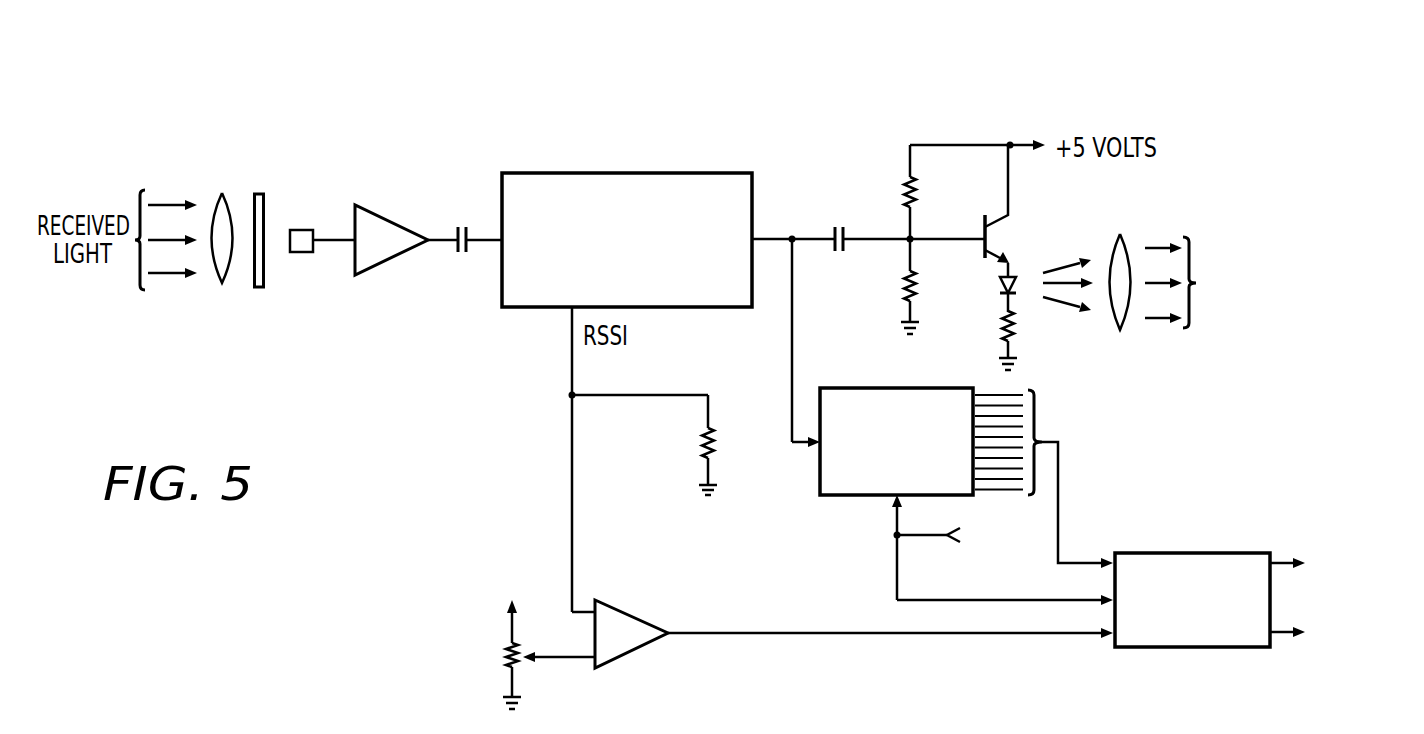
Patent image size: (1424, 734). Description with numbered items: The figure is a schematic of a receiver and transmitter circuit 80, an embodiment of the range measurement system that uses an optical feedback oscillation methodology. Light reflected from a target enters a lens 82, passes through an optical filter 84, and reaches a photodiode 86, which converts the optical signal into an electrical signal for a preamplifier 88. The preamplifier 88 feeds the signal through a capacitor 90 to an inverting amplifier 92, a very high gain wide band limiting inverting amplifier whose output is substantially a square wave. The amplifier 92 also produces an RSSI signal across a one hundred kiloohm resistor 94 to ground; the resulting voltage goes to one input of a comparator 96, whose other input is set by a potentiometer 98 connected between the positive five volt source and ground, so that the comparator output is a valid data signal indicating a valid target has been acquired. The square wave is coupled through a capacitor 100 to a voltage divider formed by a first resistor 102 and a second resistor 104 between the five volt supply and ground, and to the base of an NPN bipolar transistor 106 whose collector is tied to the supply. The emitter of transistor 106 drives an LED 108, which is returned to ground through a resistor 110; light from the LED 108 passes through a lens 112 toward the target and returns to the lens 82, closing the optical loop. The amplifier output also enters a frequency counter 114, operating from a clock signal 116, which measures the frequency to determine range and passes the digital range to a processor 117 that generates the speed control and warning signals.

The receiver and transmitter circuit 80 is at (140, 112).
The lens 82 is at (223, 197).
The optical filter 84 is at (256, 193).
The photodiode 86 is at (298, 230).
The preamplifier 88 is at (377, 265).
The capacitor 90 is at (462, 253).
The inverting amplifier 92 is at (642, 294).
The 100 kiloohm resistor 94 is at (717, 437).
The comparator 96 is at (638, 617).
The potentiometer 98 is at (505, 665).
The capacitor 100 is at (840, 225).
The first resistor 102 is at (917, 185).
The second resistor 104 is at (903, 285).
The NPN bipolar transistor 106 is at (983, 227).
The LED 108 is at (1017, 267).
The resistor 110 is at (1005, 322).
The lens 112 is at (1122, 233).
The frequency counter 114 is at (915, 486).
The clock signal 116 is at (922, 537).
The processor 117 is at (1212, 634).